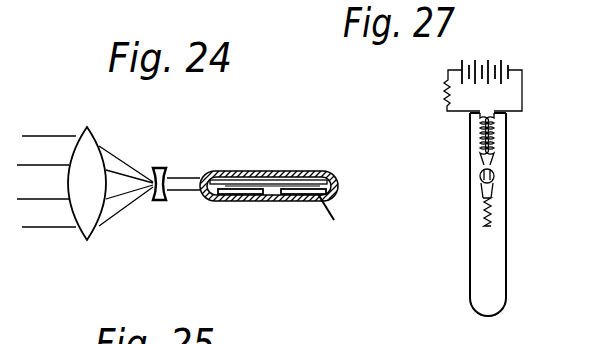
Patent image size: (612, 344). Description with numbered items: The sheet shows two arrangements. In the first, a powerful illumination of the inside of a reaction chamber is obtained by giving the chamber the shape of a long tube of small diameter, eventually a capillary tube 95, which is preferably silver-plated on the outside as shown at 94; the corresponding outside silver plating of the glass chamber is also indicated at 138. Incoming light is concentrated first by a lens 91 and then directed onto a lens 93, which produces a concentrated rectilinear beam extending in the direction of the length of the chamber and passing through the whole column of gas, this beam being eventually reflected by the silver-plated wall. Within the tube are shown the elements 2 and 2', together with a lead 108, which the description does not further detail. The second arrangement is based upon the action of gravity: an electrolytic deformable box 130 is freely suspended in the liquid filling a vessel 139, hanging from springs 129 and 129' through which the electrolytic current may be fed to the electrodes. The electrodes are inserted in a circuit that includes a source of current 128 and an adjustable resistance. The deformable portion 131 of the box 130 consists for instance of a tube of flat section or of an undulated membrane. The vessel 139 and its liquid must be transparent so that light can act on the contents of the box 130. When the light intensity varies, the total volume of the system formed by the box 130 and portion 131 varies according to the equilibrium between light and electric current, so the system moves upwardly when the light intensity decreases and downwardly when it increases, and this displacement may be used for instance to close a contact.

In FIG. 24, the lens 91 is at (90, 173).
In FIG. 24, the lens 93 is at (164, 170).
In FIG. 24, the silver plating 138 is at (207, 170).
In FIG. 24, the silver plating 94 is at (248, 172).
In FIG. 24, the capillary tube 95 is at (283, 187).
In FIG. 24, the photo-sensitive element 2 is at (240, 209).
In FIG. 24, the photo-sensitive element 2' is at (303, 209).
In FIG. 24, the lead wire 108 is at (334, 221).
In FIG. 27, the source of current 128 is at (483, 74).
In FIG. 27, the spring 129 is at (458, 139).
In FIG. 27, the spring 129' is at (521, 139).
In FIG. 27, the electrolytic deformable box 130 is at (496, 189).
In FIG. 27, the deformable portion 131 is at (494, 220).
In FIG. 27, the vessel 139 is at (491, 283).